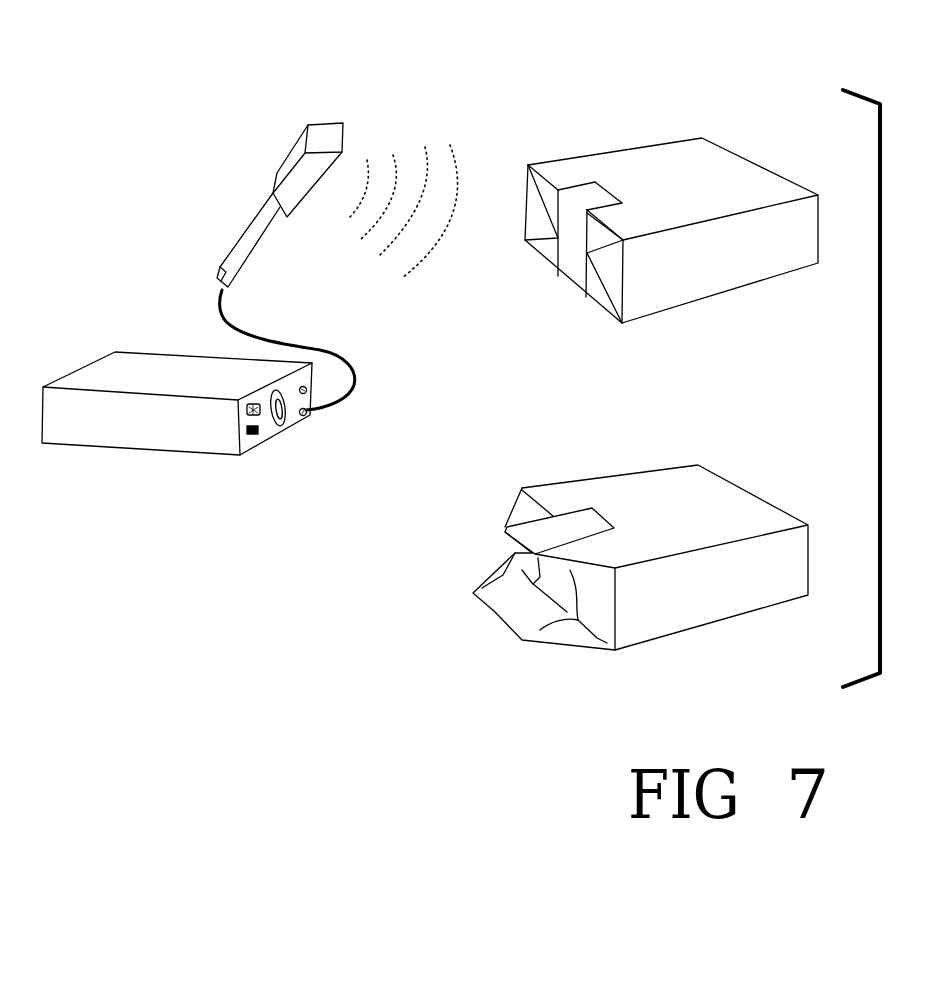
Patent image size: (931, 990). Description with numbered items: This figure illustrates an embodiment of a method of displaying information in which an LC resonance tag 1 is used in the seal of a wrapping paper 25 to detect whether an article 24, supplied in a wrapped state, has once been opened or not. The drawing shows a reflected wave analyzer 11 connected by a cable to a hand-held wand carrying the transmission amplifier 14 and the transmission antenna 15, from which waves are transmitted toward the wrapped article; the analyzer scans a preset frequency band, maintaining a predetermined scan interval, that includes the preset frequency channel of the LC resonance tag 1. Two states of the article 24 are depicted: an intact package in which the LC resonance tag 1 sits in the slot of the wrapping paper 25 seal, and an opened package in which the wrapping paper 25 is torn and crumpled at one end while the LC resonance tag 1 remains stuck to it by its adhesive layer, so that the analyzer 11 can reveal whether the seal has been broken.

The LC resonance tag 1 is at (563, 283).
The reflected wave analyzer 11 is at (81, 353).
The transmission amplifier 14 is at (272, 266).
The transmission antenna 15 is at (285, 152).
The article 24 is at (680, 126).
The wrapping paper 25 is at (592, 162).